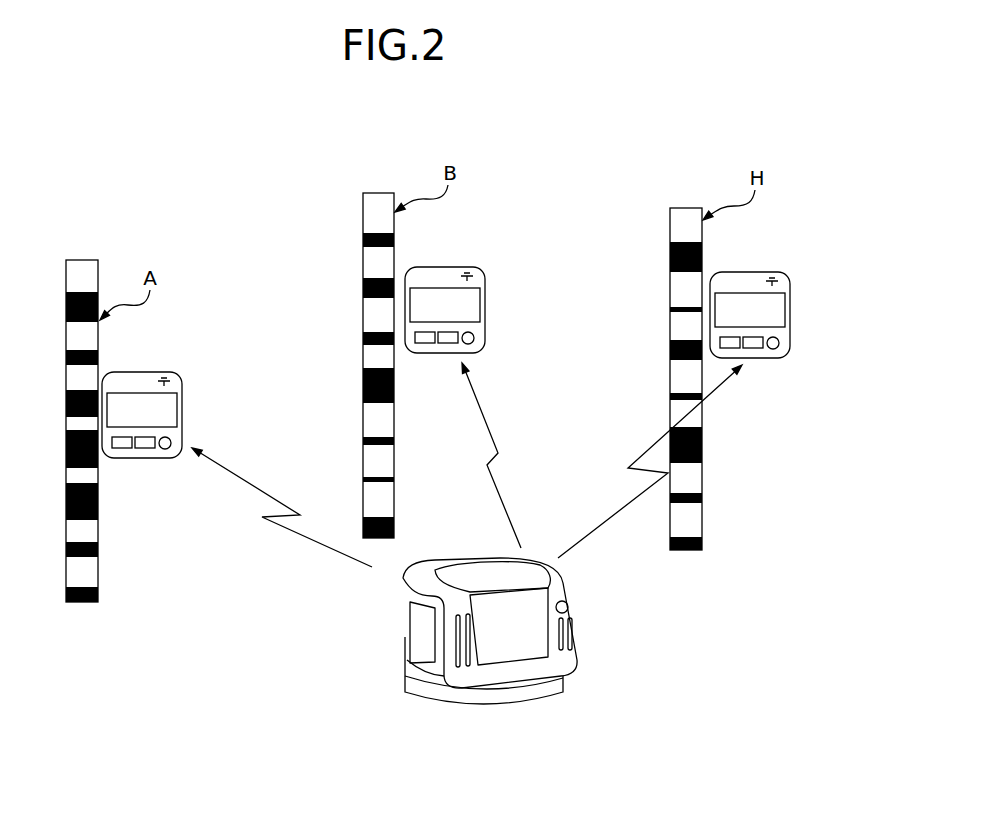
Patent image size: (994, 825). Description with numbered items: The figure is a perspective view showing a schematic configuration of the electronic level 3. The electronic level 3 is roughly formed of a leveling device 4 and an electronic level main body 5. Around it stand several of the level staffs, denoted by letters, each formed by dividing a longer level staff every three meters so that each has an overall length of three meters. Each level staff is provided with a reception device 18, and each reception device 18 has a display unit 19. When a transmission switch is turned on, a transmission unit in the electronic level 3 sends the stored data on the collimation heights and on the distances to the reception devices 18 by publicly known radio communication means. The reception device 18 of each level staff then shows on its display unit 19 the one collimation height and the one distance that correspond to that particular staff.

The electronic level 3 is at (587, 623).
The leveling device 4 is at (505, 703).
The electronic level main body 5 is at (423, 624).
The reception device 18 is at (155, 370).
The display unit 19 is at (180, 409).